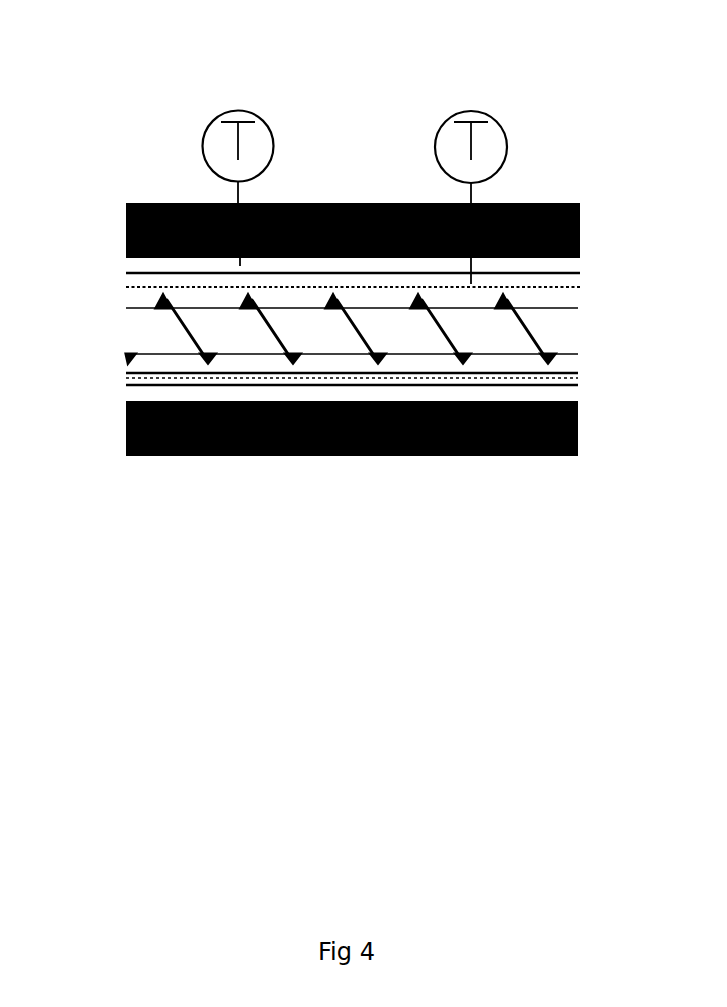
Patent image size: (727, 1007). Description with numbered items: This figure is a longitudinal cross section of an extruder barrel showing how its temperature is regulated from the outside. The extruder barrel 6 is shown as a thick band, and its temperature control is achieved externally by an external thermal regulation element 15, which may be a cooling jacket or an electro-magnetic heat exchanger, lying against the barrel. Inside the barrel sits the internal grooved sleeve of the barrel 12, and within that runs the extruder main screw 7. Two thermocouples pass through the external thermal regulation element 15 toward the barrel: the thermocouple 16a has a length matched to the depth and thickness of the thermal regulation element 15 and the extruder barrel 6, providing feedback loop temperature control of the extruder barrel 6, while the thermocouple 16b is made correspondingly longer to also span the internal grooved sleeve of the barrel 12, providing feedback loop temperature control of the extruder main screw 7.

The external thermal regulation element 15 is at (352, 201).
The thermocouple 16a is at (236, 190).
The thermocouple 16b is at (476, 190).
The extruder barrel 6 is at (125, 264).
The internal grooved sleeve of the barrel 12 is at (125, 288).
The extruder main screw 7 is at (580, 328).